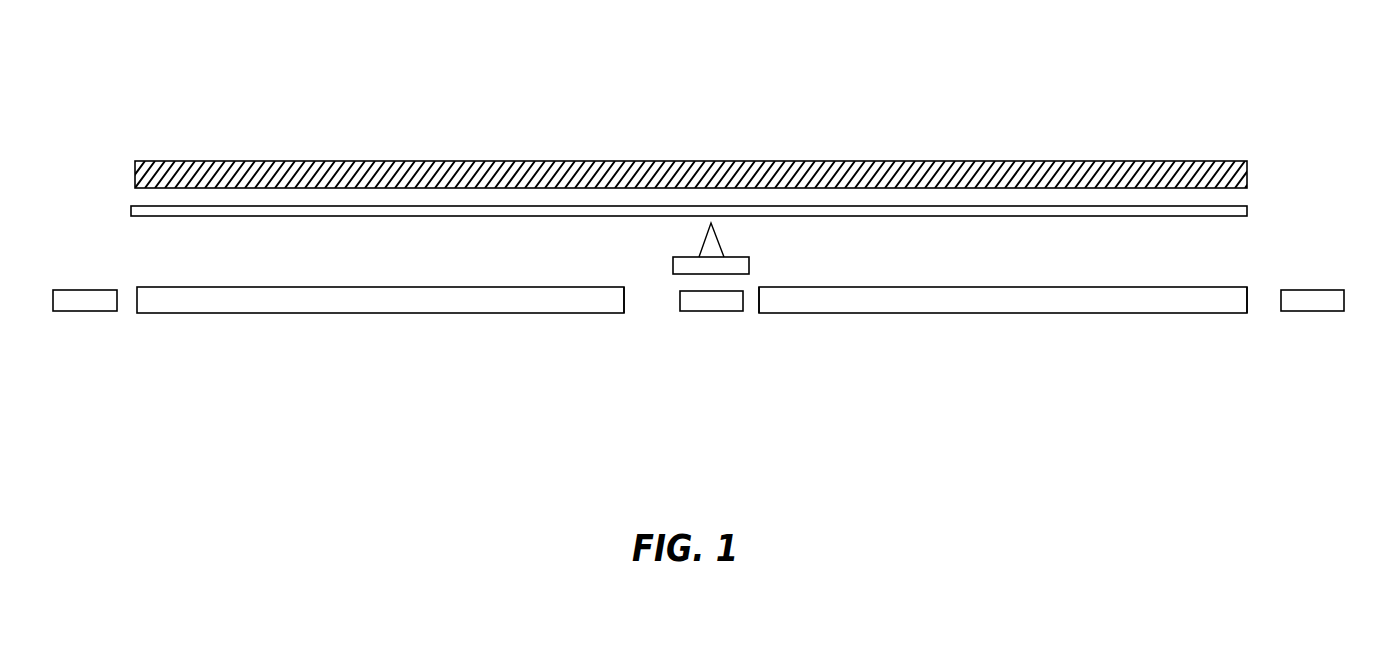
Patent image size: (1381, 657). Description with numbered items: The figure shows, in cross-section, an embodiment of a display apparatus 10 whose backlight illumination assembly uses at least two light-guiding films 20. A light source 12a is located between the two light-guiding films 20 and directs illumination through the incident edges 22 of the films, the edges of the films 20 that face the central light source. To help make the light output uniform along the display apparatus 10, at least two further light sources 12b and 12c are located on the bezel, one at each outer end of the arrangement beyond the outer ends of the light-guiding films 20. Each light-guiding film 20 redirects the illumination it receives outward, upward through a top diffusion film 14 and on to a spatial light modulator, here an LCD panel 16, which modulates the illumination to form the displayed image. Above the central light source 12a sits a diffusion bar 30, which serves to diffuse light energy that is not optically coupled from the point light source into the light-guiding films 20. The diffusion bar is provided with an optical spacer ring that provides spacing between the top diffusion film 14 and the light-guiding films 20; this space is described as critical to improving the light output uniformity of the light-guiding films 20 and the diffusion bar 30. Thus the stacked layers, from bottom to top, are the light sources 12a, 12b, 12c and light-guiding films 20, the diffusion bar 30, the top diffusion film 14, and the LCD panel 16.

The display apparatus 10 is at (650, 35).
The light source 12a is at (700, 322).
The light source 12b is at (73, 321).
The light source 12c is at (1300, 320).
The top diffusion film 14 is at (1252, 207).
The LCD panel 16 is at (1198, 154).
The light-guiding film 20 is at (262, 312).
The incident edge 22 is at (624, 315).
The diffusion bar 30 is at (670, 262).